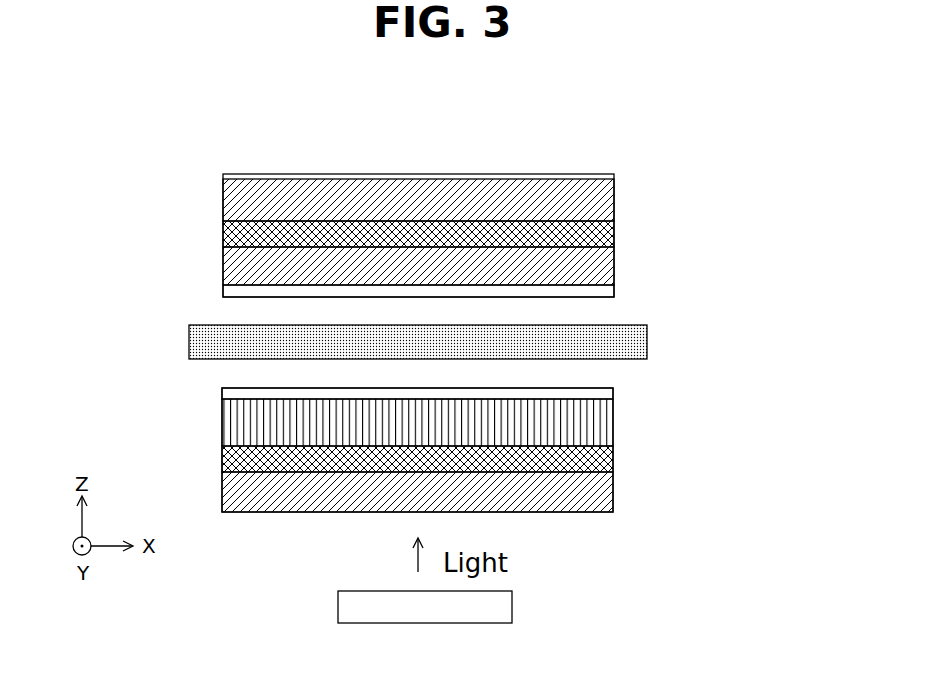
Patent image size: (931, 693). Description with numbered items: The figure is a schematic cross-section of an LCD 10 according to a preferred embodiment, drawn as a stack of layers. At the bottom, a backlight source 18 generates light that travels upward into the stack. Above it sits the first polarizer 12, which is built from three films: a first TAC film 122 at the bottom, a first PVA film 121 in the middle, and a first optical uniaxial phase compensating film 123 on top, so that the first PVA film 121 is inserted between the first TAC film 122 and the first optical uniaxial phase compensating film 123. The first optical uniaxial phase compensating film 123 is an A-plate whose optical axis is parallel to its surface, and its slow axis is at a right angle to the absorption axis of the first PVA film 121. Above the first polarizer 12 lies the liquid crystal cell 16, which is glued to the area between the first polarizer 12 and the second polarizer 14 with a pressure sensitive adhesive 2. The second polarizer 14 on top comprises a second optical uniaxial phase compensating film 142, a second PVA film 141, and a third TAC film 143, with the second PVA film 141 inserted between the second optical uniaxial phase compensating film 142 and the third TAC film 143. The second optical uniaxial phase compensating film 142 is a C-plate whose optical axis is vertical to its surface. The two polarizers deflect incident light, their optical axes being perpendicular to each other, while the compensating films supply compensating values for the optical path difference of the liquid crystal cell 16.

The LCD 10 is at (438, 137).
The second polarizer 14 is at (508, 225).
The third TAC film 143 is at (600, 200).
The second PVA film 141 is at (600, 236).
The second optical uniaxial phase compensating film 142 is at (600, 268).
The pressure sensitive adhesive 2 is at (600, 293).
The liquid crystal cell 16 is at (625, 343).
The first polarizer 12 is at (507, 441).
The first optical uniaxial phase compensating film 123 is at (600, 417).
The first PVA film 121 is at (600, 460).
The first TAC film 122 is at (600, 490).
The backlight source 18 is at (488, 610).